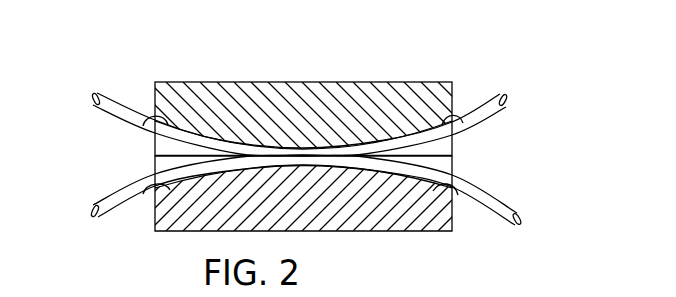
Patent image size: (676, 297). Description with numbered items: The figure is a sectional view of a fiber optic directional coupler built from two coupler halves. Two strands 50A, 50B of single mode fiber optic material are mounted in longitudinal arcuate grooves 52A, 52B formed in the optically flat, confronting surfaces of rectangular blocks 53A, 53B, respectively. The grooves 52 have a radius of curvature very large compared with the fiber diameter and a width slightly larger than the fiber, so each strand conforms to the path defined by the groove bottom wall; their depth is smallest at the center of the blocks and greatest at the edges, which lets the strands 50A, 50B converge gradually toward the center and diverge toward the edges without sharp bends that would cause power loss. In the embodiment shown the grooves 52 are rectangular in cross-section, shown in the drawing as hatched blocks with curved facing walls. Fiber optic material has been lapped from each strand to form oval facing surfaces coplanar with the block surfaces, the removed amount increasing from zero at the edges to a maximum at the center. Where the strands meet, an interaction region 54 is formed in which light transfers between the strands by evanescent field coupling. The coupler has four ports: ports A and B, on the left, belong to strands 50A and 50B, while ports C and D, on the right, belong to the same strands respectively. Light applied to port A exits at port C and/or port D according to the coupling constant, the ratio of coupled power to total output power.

The fiber optic strand 50A is at (138, 124).
The fiber optic strand 50B is at (136, 191).
The grooves 52 is at (459, 120).
The longitudinal arcuate groove 52A is at (146, 117).
The longitudinal arcuate groove 52B is at (147, 195).
The block 53A is at (373, 94).
The block 53B is at (347, 214).
The interaction region 54 is at (272, 147).
The port A is at (93, 96).
The port B is at (90, 210).
The port C is at (507, 97).
The port D is at (523, 221).